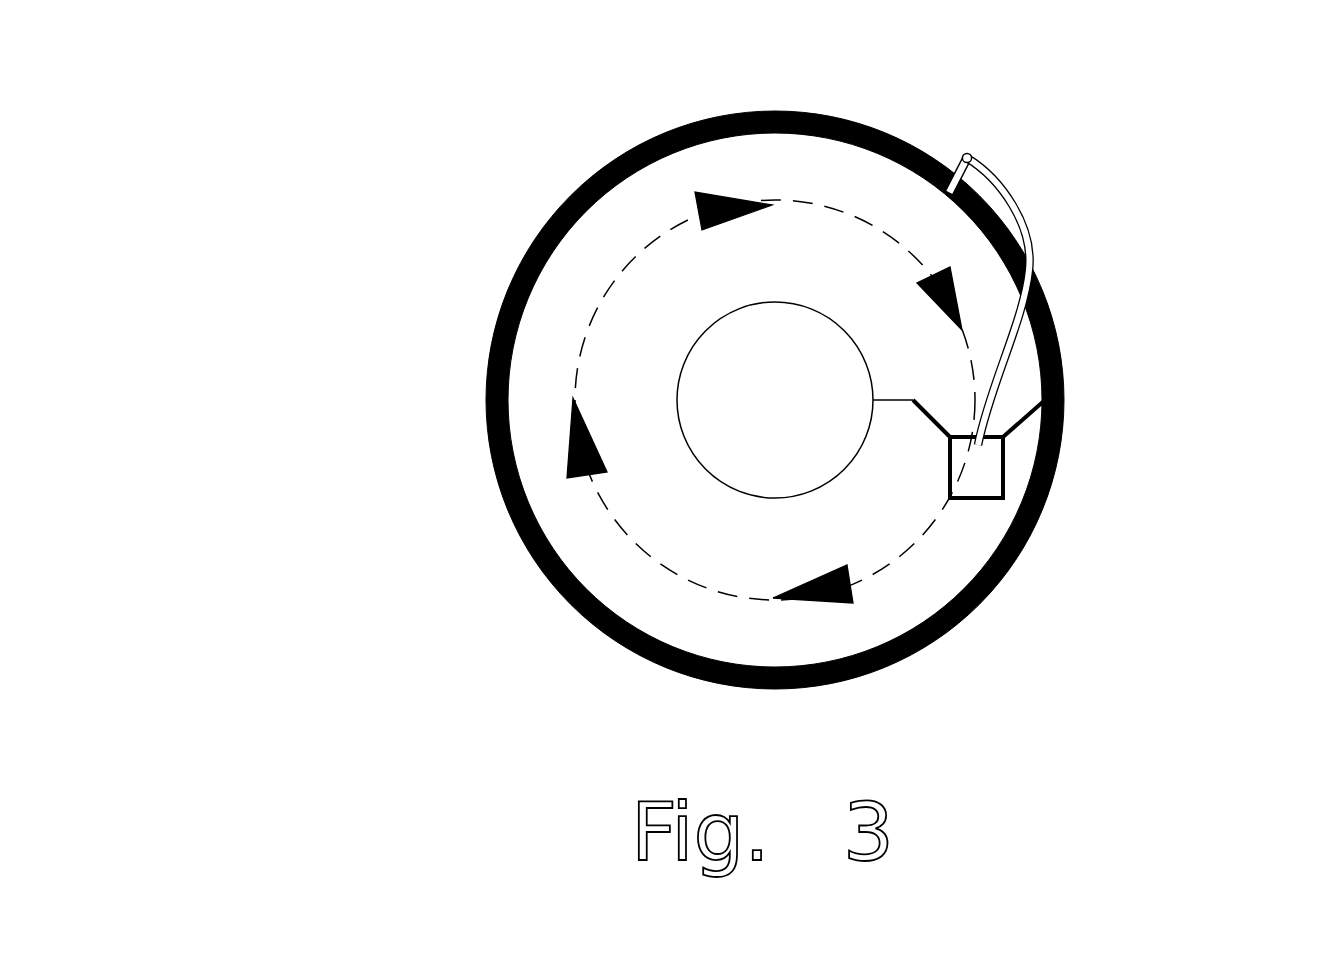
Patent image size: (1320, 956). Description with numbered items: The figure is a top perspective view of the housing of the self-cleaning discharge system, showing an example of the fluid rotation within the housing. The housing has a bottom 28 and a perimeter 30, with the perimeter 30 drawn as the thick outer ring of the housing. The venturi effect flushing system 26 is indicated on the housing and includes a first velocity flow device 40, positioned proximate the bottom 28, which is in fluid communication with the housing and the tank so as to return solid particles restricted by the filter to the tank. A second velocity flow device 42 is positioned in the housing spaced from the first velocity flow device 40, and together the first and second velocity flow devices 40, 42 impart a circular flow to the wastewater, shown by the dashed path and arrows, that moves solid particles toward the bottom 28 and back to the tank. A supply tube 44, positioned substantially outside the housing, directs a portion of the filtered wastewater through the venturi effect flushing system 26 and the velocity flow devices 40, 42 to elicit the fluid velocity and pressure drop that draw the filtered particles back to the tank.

The venturi effect flushing system 26 is at (1113, 464).
The bottom 28 is at (578, 233).
The perimeter 30 is at (933, 640).
The first velocity flow device 40 is at (983, 482).
The second velocity flow device 42 is at (945, 163).
The supply tube 44 is at (1032, 232).